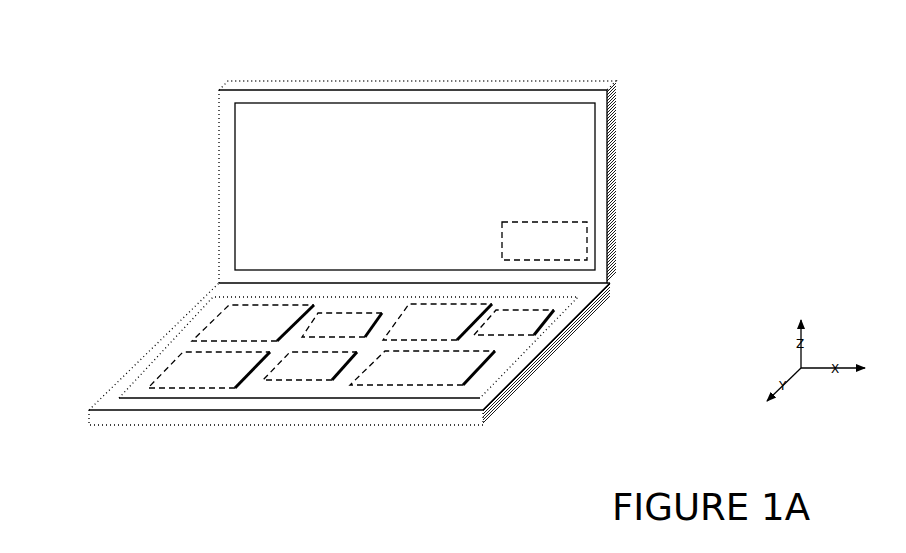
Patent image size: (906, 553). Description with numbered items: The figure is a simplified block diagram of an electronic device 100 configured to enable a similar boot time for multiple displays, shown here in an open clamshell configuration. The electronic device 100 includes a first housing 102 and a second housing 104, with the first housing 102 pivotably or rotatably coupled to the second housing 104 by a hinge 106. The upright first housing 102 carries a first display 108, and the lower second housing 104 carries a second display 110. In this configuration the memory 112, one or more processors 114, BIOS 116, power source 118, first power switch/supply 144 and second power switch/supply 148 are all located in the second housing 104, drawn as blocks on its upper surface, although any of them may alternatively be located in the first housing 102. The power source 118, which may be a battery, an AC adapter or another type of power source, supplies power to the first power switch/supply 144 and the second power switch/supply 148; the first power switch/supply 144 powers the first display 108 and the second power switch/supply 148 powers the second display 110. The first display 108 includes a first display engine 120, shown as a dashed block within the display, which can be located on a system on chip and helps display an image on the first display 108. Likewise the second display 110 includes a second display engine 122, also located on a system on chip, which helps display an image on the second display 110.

The electronic device 100 is at (745, 87).
The first housing 102 is at (457, 154).
The second housing 104 is at (316, 354).
The hinge 106 is at (672, 273).
The first display 108 is at (344, 186).
The second display 110 is at (389, 347).
The memory 112 is at (253, 323).
The processors 114 is at (209, 370).
The BIOS 116 is at (310, 366).
The power source 118 is at (422, 368).
The first display engine 120 is at (544, 241).
The second display engine 122 is at (437, 322).
The first power switch/supply 144 is at (342, 325).
The second power switch/supply 148 is at (514, 322).